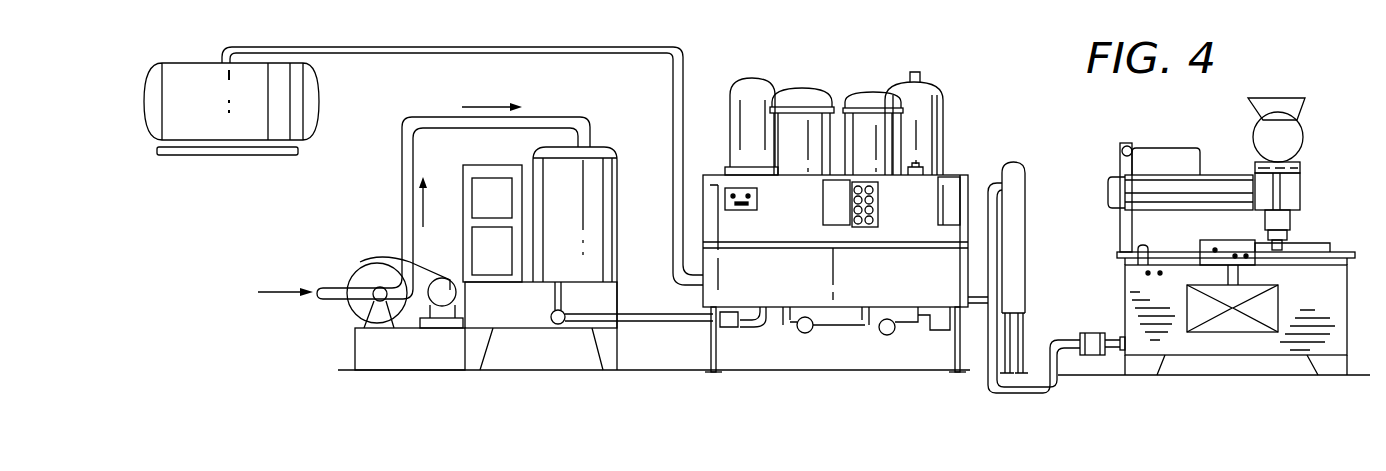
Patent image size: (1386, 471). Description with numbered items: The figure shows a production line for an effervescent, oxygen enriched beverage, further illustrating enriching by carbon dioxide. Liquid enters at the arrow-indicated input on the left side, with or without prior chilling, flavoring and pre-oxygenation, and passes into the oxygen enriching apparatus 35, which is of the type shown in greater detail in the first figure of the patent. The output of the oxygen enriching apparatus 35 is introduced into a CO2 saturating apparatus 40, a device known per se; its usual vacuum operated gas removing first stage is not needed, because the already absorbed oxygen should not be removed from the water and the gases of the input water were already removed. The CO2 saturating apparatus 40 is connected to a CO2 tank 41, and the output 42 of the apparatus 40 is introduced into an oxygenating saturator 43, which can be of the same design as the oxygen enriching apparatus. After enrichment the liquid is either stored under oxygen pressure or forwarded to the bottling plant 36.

The CO2 tank 41 is at (198, 76).
The oxygen enriching apparatus 35 is at (512, 320).
The CO2 saturating apparatus 40 is at (800, 98).
The oxygenating saturator 43 is at (1012, 172).
The output 42 is at (1008, 247).
The bottling plant 36 is at (1178, 147).